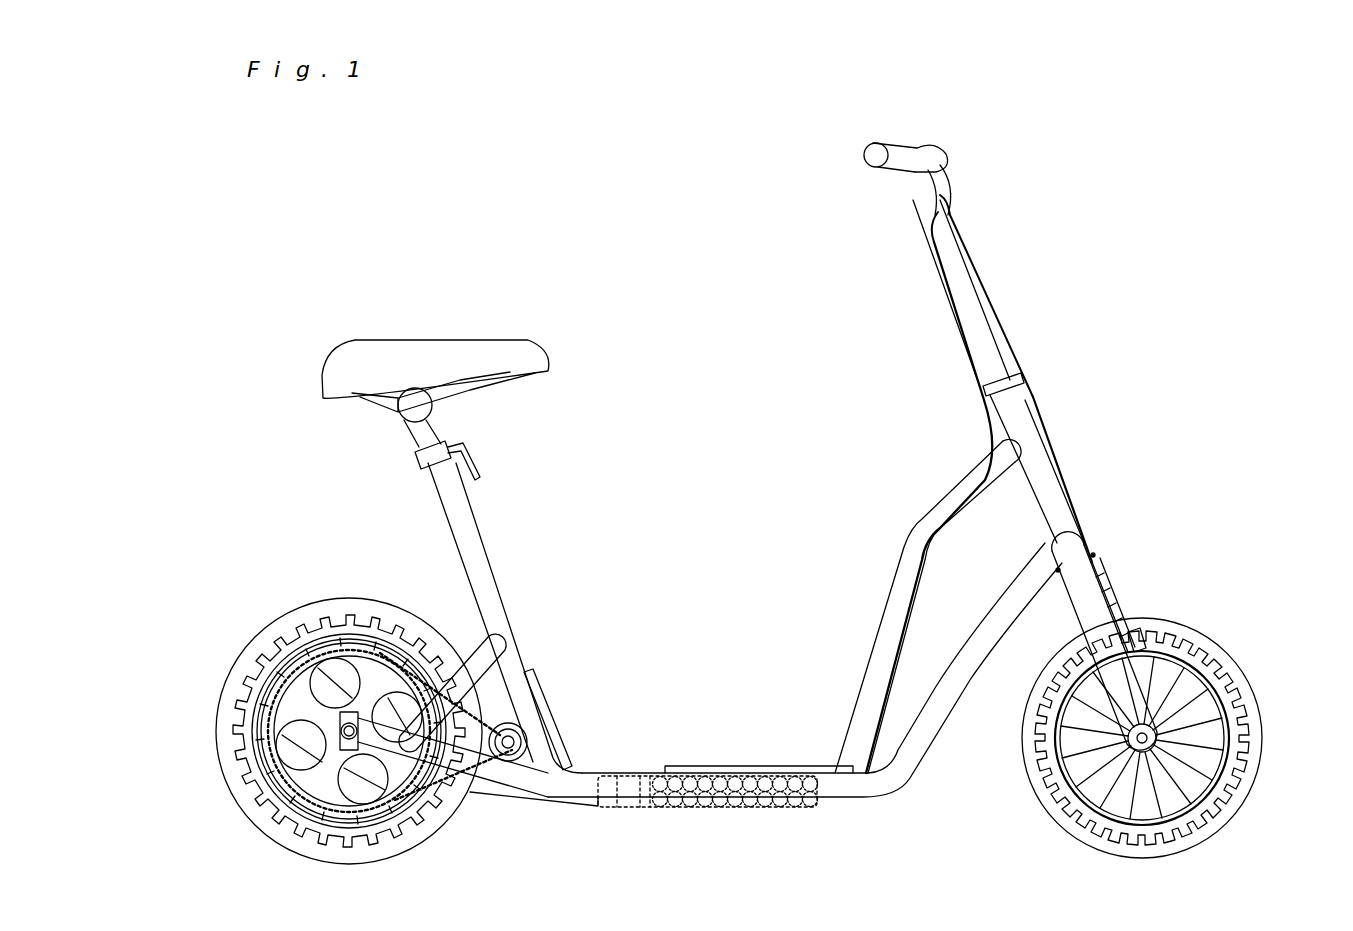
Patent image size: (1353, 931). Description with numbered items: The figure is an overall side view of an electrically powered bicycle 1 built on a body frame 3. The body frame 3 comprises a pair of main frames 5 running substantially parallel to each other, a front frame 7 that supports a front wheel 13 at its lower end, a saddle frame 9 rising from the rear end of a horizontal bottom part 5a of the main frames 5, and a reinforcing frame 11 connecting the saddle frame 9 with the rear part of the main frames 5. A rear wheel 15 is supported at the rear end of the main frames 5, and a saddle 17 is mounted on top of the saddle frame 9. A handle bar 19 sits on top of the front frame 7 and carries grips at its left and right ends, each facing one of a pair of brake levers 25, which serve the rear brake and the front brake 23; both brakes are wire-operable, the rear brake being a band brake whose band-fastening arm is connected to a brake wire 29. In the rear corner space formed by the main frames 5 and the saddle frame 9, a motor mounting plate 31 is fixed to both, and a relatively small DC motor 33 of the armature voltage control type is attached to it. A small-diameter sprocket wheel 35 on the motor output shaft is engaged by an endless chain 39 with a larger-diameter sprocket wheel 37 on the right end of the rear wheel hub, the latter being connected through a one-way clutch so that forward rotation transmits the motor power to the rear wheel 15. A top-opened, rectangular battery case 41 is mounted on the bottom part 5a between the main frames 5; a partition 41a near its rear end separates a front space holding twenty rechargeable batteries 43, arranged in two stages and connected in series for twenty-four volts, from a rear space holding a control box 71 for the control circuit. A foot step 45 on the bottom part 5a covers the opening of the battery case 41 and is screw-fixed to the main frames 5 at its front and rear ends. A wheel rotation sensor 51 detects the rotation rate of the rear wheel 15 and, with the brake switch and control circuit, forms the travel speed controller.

The electrically powered bicycle 1 is at (1068, 245).
The body frame 3 is at (936, 507).
The main frames 5 is at (930, 725).
The horizontal bottom part 5a is at (870, 792).
The front frame 7 is at (1045, 500).
The saddle frame 9 is at (447, 497).
The reinforcing frame 11 is at (486, 658).
The front wheel 13 is at (1196, 630).
The rear wheel 15 is at (282, 638).
The saddle 17 is at (447, 345).
The handle bar 19 is at (873, 163).
The front brake 23 is at (1120, 598).
The brake levers 25 is at (930, 178).
The brake wire 29 is at (945, 315).
The motor mounting plate 31 is at (526, 775).
The DC motor 33 is at (530, 705).
The sprocket wheel 35 is at (508, 748).
The sprocket wheel 37 is at (374, 668).
The endless chain 39 is at (512, 726).
The battery case 41 is at (600, 808).
The partition 41a is at (640, 776).
The batteries 43 is at (696, 776).
The foot step 45 is at (800, 770).
The wheel rotation sensor 51 is at (336, 648).
The control box 71 is at (614, 776).